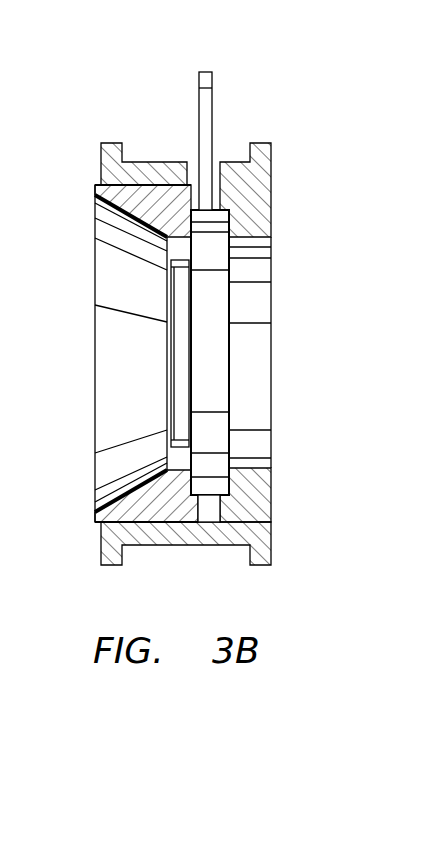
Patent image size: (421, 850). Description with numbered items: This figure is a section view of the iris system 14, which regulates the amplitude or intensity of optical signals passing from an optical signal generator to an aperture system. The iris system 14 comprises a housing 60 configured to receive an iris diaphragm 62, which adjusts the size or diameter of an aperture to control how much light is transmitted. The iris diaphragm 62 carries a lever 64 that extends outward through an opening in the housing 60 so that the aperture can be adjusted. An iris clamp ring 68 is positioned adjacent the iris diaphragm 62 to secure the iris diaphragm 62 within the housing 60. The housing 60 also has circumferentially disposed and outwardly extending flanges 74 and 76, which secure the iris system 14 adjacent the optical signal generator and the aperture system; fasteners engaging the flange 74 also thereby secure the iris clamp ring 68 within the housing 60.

The iris system 14 is at (287, 123).
The housing 60 is at (271, 519).
The iris diaphragm 62 is at (229, 355).
The lever 64 is at (207, 72).
The iris clamp ring 68 is at (95, 187).
The flange 74 is at (116, 143).
The flange 76 is at (261, 565).